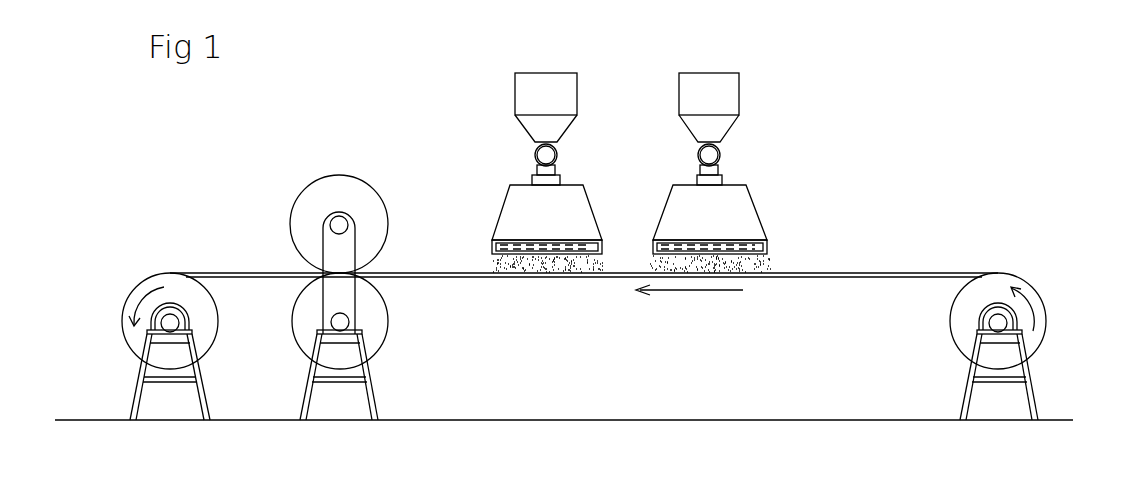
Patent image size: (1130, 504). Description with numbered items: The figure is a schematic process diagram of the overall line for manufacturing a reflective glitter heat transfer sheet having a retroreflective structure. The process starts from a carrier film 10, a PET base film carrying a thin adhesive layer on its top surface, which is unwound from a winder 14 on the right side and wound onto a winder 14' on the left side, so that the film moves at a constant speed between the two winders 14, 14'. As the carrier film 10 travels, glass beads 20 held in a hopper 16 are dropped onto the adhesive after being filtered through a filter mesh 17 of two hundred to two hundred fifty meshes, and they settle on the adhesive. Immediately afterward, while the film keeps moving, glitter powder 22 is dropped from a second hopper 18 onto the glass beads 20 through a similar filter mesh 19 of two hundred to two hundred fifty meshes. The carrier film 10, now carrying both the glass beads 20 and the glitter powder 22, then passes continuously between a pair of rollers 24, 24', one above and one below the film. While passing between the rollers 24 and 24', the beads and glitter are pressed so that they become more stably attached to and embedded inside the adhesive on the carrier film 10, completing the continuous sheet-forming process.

The carrier film 10 is at (955, 273).
The winder 14 is at (1022, 346).
The winder 14' is at (148, 346).
The hopper 16 is at (733, 103).
The filter mesh 17 is at (737, 241).
The hopper 18 is at (526, 104).
The filter mesh 19 is at (528, 243).
The glass beads 20 is at (760, 265).
The glitter powder 22 is at (495, 262).
The roller 24 is at (325, 246).
The roller 24' is at (373, 346).